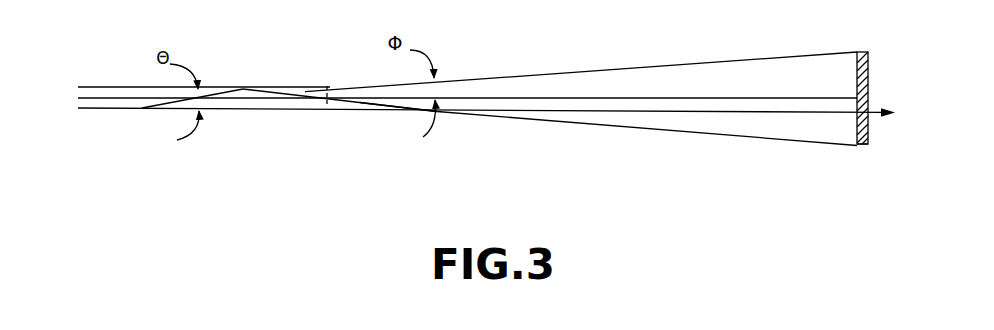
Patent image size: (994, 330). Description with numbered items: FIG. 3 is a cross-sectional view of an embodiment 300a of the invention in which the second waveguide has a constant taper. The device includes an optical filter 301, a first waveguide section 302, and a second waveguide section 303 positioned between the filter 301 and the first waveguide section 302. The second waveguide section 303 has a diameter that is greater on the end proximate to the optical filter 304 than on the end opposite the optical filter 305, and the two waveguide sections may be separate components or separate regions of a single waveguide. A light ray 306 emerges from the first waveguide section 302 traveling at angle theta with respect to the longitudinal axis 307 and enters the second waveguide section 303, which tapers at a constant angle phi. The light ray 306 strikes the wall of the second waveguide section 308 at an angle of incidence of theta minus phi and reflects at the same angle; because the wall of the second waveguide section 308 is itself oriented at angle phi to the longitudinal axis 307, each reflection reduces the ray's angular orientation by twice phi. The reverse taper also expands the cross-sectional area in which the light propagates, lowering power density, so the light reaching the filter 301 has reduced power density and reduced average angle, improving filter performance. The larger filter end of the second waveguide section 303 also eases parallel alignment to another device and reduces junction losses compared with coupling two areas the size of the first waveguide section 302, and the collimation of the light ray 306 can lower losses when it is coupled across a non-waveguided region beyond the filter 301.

The embodiment 300a is at (637, 130).
The optical filter 301 is at (860, 50).
The first waveguide section 302 is at (250, 100).
The second waveguide section 303 is at (705, 78).
The end proximate to the optical filter 304 is at (862, 146).
The end opposite the optical filter 305 is at (327, 107).
The light ray 306 is at (280, 90).
The longitudinal axis 307 is at (520, 100).
The wall of the second waveguide section 308 is at (368, 110).